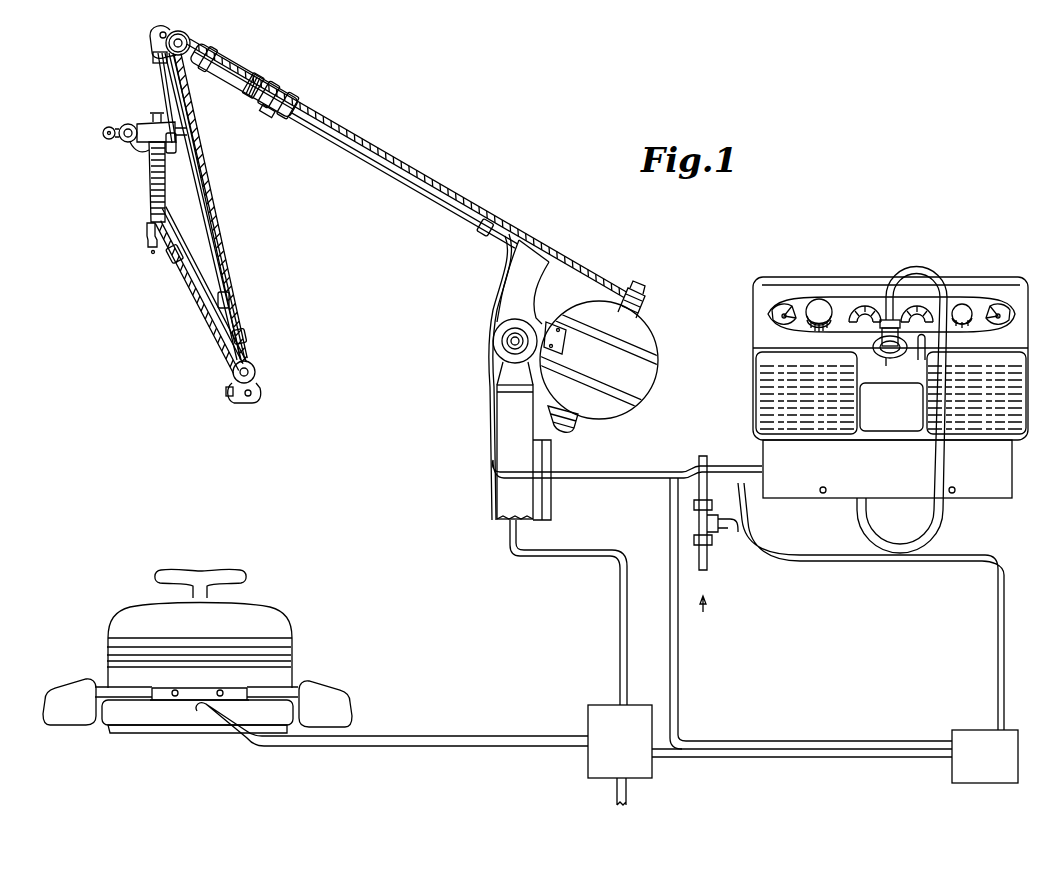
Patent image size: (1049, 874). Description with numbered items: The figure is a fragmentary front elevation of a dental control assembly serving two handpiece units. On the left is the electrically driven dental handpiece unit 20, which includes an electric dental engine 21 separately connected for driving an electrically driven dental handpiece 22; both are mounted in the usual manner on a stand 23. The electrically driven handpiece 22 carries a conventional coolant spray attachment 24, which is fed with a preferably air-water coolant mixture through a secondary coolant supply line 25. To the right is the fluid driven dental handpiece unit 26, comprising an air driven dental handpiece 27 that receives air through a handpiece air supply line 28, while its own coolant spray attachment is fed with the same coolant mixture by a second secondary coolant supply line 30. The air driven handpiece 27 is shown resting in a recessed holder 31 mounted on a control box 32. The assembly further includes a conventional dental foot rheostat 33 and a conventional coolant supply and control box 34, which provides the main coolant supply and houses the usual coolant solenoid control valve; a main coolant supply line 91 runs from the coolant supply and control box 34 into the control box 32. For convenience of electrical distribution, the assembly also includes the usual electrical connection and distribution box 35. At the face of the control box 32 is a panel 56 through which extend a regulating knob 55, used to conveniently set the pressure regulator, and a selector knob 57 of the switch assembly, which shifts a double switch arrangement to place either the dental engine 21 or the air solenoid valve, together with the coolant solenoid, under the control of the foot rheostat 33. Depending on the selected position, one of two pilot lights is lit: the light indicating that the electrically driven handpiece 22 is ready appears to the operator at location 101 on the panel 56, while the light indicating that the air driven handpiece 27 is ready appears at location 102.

The electrically driven dental handpiece unit 20 is at (456, 226).
The electric dental engine 21 is at (632, 390).
The electrically driven dental handpiece 22 is at (152, 175).
The stand 23 is at (497, 440).
The coolant spray attachment 24 is at (148, 245).
The secondary coolant supply line 25 is at (647, 479).
The fluid driven dental handpiece unit 26 is at (872, 340).
The air driven dental handpiece 27 is at (926, 352).
The handpiece air supply line 28 is at (940, 518).
The secondary coolant supply line 30 is at (858, 528).
The recessed holder 31 is at (890, 360).
The control box 32 is at (762, 273).
The dental foot rheostat 33 is at (260, 615).
The coolant supply and control box 34 is at (960, 744).
The electrical connection and distribution box 35 is at (600, 728).
The regulating knob 55 is at (817, 300).
The panel 56 is at (850, 305).
The selector knob 57 is at (963, 304).
The main coolant supply line 91 is at (998, 660).
The pilot light location 101 is at (1004, 312).
The pilot light location 102 is at (778, 312).